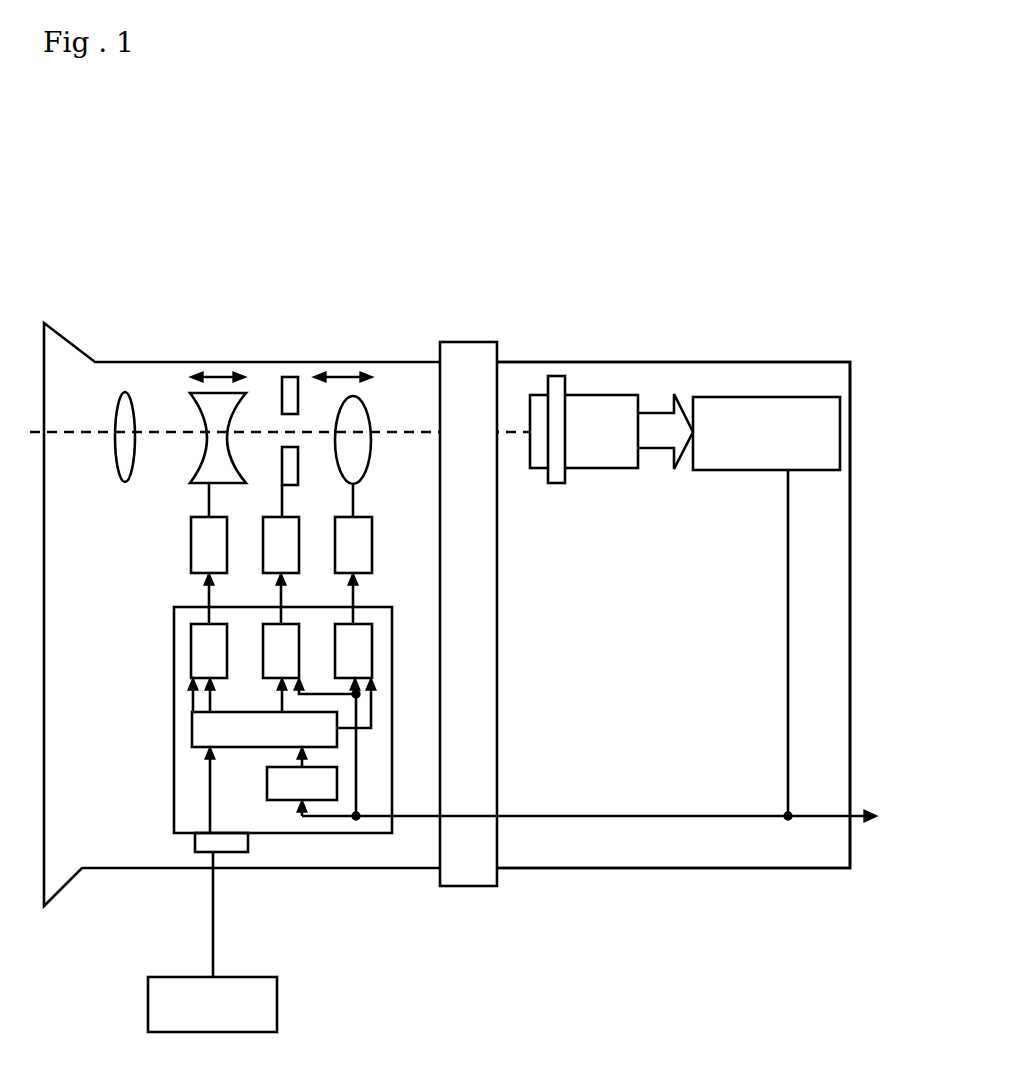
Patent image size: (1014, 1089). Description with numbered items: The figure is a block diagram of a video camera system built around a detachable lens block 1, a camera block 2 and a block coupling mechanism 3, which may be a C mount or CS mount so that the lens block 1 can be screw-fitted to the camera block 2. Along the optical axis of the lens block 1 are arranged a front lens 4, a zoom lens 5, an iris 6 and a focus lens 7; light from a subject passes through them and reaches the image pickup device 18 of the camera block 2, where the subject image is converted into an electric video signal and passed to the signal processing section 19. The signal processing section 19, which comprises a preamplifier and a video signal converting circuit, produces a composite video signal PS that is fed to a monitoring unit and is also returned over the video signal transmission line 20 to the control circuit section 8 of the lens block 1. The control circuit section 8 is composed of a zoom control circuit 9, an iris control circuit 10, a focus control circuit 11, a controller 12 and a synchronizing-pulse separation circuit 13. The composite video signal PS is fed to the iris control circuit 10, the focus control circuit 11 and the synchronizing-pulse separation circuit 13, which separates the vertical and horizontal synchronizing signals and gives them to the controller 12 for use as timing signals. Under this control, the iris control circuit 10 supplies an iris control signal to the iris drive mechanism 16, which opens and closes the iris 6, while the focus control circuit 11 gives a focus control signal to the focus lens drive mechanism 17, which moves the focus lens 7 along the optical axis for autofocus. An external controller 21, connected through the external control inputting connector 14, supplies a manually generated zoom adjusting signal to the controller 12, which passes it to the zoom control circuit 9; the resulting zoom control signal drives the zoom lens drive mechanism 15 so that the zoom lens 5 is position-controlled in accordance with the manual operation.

The detachable lens block 1 is at (413, 361).
The camera block 2 is at (737, 362).
The block coupling mechanism 3 is at (470, 345).
The front lens 4 is at (128, 397).
The zoom lens 5 is at (222, 397).
The iris 6 is at (291, 385).
The focus lens 7 is at (353, 397).
The control circuit section 8 is at (174, 779).
The zoom control circuit 9 is at (190, 648).
The iris control circuit 10 is at (288, 622).
The focus control circuit 11 is at (362, 622).
The controller 12 is at (192, 721).
The synchronizing-pulse separation circuit 13 is at (328, 800).
The external control inputting connector 14 is at (243, 855).
The zoom lens drive mechanism 15 is at (191, 548).
The iris drive mechanism 16 is at (263, 533).
The focus lens drive mechanism 17 is at (373, 549).
The image pickup device 18 is at (560, 376).
The signal processing section 19 is at (727, 470).
The video signal transmission line 20 is at (583, 818).
The external controller 21 is at (278, 1005).
The composite video signal PS is at (788, 630).